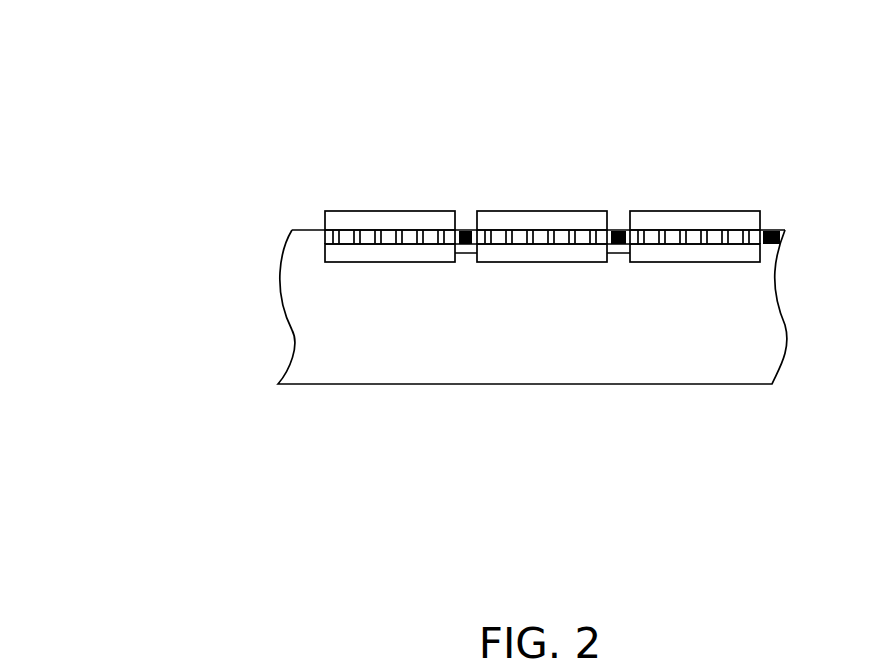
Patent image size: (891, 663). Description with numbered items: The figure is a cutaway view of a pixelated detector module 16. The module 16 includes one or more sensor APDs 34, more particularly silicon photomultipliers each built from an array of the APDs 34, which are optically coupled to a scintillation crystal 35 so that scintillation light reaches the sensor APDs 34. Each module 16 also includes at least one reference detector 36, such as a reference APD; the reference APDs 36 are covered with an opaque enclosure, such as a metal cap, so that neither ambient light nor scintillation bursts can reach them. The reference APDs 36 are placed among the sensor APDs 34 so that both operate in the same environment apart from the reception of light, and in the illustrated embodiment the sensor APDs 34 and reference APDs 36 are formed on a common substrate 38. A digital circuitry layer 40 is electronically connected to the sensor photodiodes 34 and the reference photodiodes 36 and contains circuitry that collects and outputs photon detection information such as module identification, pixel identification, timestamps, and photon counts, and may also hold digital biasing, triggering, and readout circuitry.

The pixelated detector module 16 is at (218, 175).
The sensor APD 34 is at (331, 240).
The scintillation crystal 35 is at (723, 211).
The reference detector 36 is at (466, 231).
The common substrate 38 is at (733, 347).
The digital circuitry layer 40 is at (308, 253).